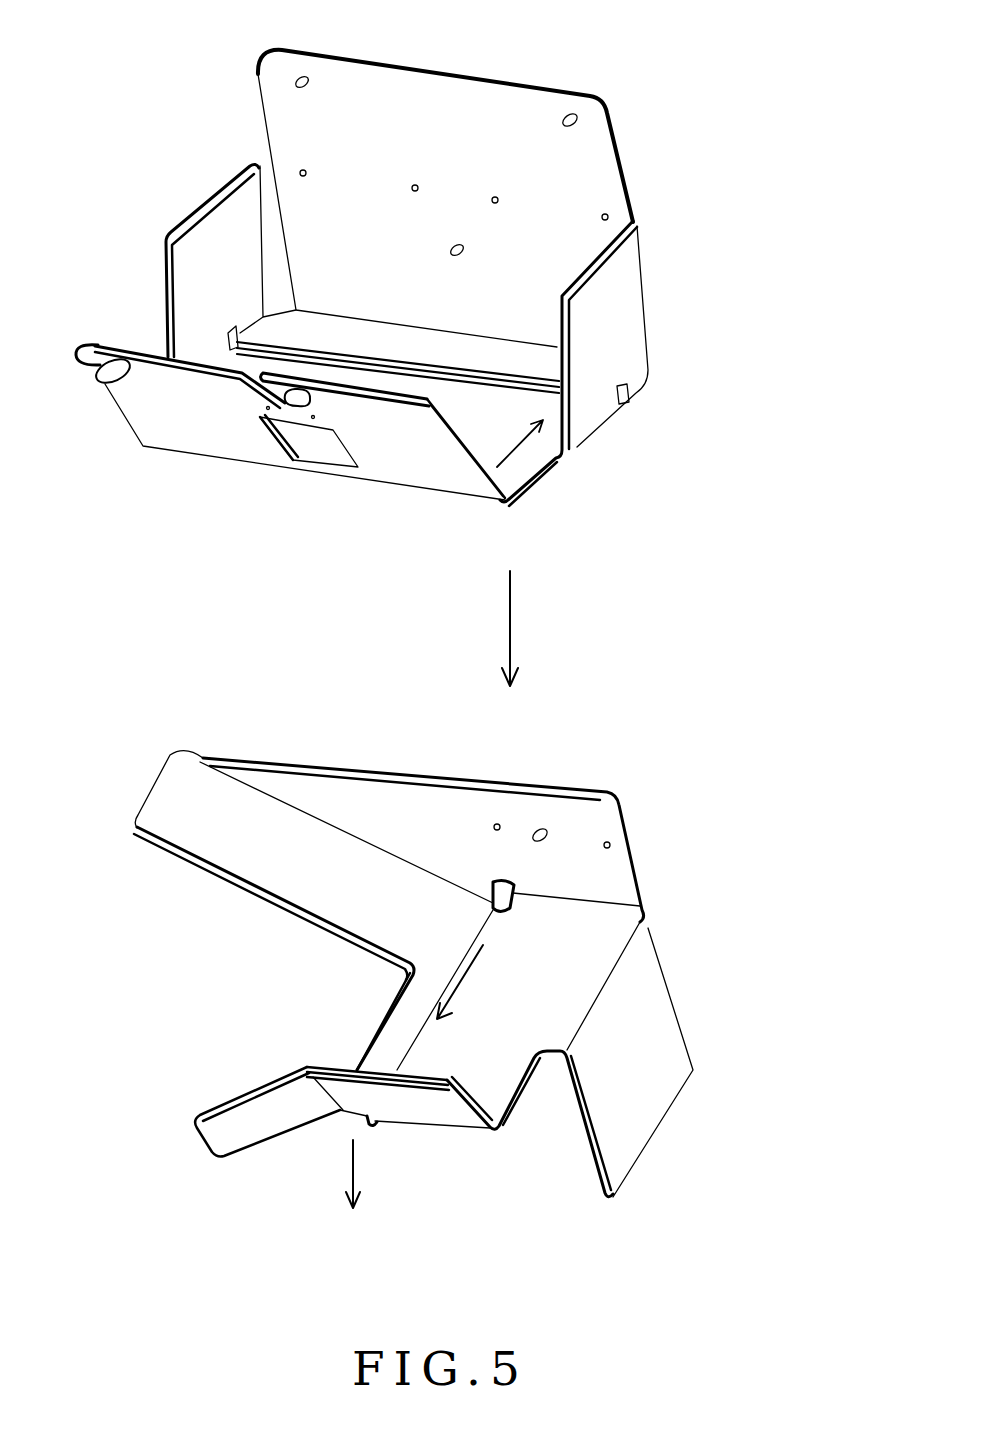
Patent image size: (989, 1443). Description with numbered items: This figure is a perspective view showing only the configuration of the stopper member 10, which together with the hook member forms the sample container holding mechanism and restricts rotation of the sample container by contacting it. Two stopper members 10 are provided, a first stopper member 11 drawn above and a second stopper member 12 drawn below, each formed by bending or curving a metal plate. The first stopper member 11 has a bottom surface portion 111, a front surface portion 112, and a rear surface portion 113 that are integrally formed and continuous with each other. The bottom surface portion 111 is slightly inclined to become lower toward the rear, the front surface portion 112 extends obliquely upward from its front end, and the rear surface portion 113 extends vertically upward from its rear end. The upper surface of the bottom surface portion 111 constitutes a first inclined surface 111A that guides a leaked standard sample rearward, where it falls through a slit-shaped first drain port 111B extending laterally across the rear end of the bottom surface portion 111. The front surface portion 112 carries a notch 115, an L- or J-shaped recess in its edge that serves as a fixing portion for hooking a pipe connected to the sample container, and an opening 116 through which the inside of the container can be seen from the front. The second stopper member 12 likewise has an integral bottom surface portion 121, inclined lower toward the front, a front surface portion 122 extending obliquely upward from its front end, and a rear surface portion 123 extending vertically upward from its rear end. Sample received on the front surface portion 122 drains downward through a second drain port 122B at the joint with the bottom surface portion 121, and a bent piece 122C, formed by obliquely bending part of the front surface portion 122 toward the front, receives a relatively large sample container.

The stopper member 10 is at (645, 252).
The first stopper member 11 is at (422, 285).
The second stopper member 12 is at (497, 1009).
The bottom surface portion 111 is at (553, 442).
The first inclined surface 111A is at (490, 404).
The first drain port 111B is at (320, 352).
The front surface portion 112 is at (167, 447).
The rear surface portion 113 is at (607, 143).
The notch 115 is at (100, 385).
The opening 116 is at (270, 447).
The bottom surface portion 121 is at (620, 940).
The front surface portion 122 is at (352, 1167).
The second drain port 122B is at (453, 1117).
The bent piece 122C is at (257, 1137).
The rear surface portion 123 is at (620, 870).